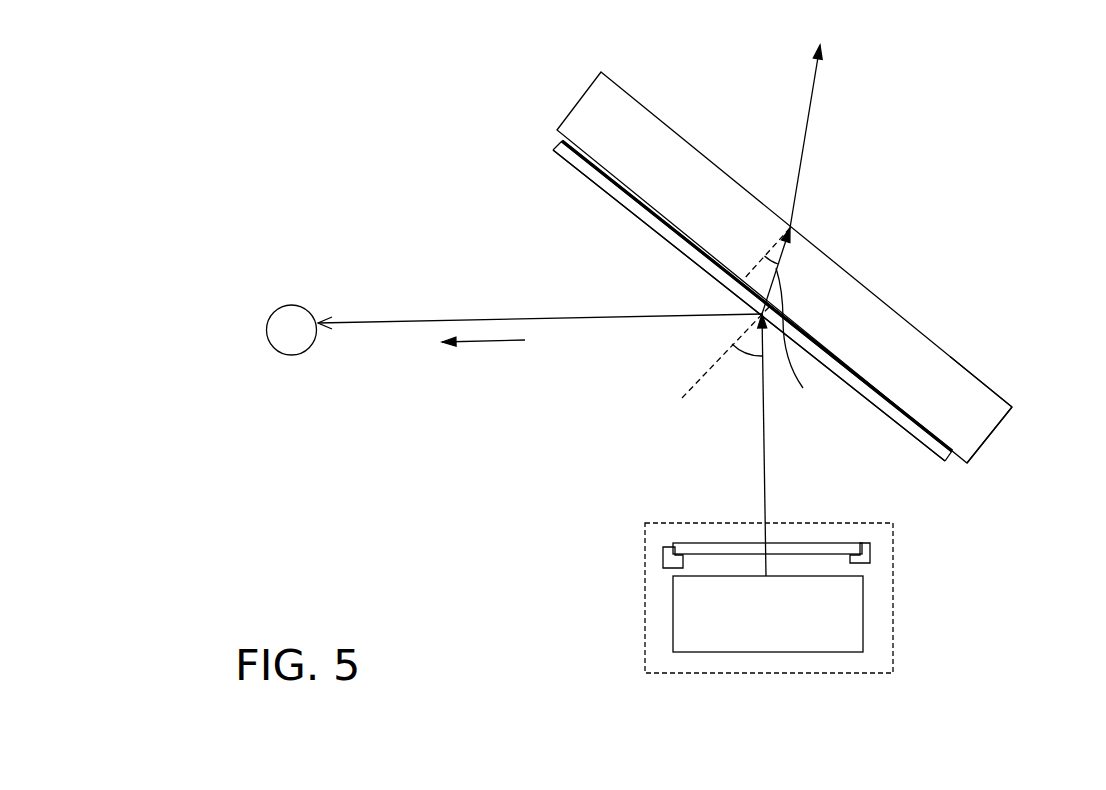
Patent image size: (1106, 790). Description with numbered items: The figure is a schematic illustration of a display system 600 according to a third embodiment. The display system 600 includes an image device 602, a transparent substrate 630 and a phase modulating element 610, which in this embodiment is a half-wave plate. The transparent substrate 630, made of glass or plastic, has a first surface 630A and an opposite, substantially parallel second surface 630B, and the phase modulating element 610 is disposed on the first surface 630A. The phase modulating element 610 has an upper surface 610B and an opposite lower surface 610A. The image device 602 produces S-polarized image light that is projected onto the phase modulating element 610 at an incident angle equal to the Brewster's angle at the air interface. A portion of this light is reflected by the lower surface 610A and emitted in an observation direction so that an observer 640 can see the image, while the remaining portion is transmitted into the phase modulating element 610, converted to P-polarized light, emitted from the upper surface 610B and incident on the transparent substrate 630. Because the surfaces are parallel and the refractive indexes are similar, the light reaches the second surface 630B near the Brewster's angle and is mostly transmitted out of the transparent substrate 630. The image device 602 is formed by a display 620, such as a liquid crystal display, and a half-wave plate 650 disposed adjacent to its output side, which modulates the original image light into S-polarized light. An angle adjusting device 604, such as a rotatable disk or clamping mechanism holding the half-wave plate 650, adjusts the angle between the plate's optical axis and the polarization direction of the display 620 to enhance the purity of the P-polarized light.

The display system 600 is at (992, 67).
The phase modulating element 610 is at (617, 190).
The lower surface 610A is at (560, 159).
The upper surface 610B is at (574, 138).
The transparent substrate 630 is at (867, 330).
The first surface 630A is at (967, 463).
The second surface 630B is at (1002, 398).
The observer 640 is at (287, 335).
The image device 602 is at (892, 583).
The display 620 is at (830, 617).
The half-wave plate 650 is at (842, 542).
The angle adjusting device 604 is at (663, 566).